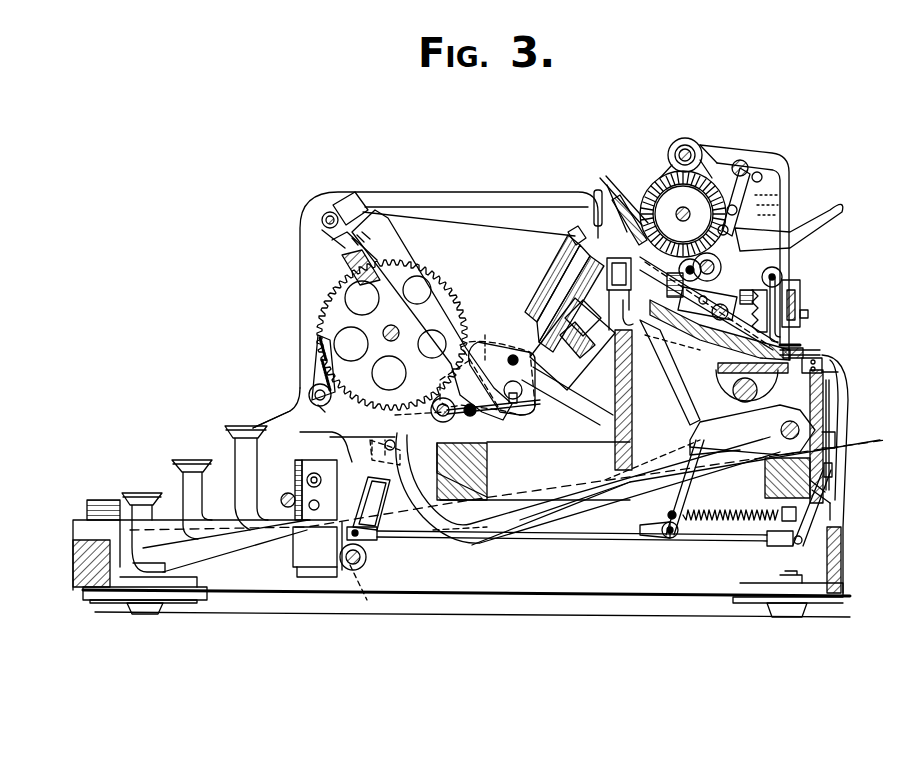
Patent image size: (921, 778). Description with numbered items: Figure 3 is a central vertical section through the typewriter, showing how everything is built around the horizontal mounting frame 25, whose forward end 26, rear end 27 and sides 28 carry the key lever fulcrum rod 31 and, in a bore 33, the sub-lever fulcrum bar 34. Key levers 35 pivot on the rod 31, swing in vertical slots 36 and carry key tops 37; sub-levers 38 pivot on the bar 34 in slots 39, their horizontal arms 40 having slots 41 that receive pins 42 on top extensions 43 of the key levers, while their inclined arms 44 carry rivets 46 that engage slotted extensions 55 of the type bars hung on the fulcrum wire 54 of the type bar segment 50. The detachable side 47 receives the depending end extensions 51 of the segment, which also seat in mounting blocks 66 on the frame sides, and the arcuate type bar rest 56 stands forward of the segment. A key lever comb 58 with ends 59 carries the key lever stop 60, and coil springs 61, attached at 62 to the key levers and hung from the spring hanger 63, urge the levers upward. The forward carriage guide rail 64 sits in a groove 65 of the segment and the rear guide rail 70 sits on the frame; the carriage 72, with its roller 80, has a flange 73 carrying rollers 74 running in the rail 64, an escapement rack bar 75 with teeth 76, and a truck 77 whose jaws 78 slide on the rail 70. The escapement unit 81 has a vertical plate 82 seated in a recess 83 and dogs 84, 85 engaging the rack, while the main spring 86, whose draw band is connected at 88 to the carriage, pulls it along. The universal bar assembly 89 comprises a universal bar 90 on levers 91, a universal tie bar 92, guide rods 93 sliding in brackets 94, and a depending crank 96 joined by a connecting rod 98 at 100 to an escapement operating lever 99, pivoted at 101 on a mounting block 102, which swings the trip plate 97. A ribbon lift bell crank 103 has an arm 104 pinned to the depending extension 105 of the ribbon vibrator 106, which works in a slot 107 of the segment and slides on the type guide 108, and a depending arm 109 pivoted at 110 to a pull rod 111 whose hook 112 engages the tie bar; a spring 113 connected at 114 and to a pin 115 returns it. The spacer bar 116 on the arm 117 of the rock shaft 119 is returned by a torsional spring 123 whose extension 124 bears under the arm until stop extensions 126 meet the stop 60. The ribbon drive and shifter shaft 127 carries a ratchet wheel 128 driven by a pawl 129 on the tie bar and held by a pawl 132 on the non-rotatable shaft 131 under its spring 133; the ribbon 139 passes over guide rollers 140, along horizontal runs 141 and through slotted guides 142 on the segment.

The mounting frame 25 is at (510, 522).
The forward end 26 is at (488, 471).
The rear end 27 is at (822, 487).
The sides 28 is at (545, 492).
The key lever fulcrum rod 31 is at (840, 441).
The cylindrical bore 33 is at (438, 498).
The sub-lever fulcrum bar 34 is at (420, 490).
The key levers 35 is at (475, 541).
The vertical slots 36 is at (765, 468).
The key tops 37 is at (203, 458).
The sub-levers 38 is at (488, 451).
The vertical slots 39 is at (488, 488).
The horizontal arms 40 is at (376, 456).
The slots 41 is at (374, 441).
The pins 42 is at (390, 440).
The top extensions 43 is at (345, 438).
The inclined arms 44 is at (502, 412).
The rivets 46 is at (538, 402).
The detachable side 47 is at (282, 412).
The type bar segment 50 is at (558, 287).
The depending end extensions 51 is at (573, 391).
The fulcrum wire 54 is at (522, 350).
The slotted extensions 55 is at (535, 407).
The type bar rest 56 is at (345, 263).
The key lever comb 58 is at (298, 470).
The comb ends 59 is at (312, 578).
The key lever stop 60 is at (285, 498).
The retractile coil springs 61 is at (630, 448).
The spring attachment 62 is at (625, 481).
The spring hanger 63 is at (636, 315).
The forward carriage guide rail 64 is at (563, 250).
The groove 65 is at (583, 318).
The mounting blocks 66 is at (583, 438).
The rear carriage guide rail 70 is at (740, 397).
The carriage 72 is at (772, 150).
The forward vertical flange 73 is at (640, 300).
The ball bearing rollers 74 is at (626, 254).
The escapement rack bar 75 is at (792, 346).
The rack teeth 76 is at (805, 354).
The truck 77 is at (718, 369).
The depending jaws 78 is at (786, 422).
The roller 80 is at (666, 190).
The escapement unit 81 is at (825, 403).
The vertical plate 82 is at (832, 471).
The machined recess 83 is at (818, 494).
The escapement dog 84 is at (812, 352).
The escapement dog 85 is at (823, 364).
The main spring 86 is at (655, 390).
The draw band connection 88 is at (690, 343).
The universal bar assembly 89 is at (445, 395).
The universal bar 90 is at (470, 404).
The universal bar levers 91 is at (486, 335).
The universal tie bar 92 is at (438, 418).
The guide rods 93 is at (561, 402).
The guide brackets 94 is at (682, 480).
The depending crank 96 is at (371, 503).
The trip plate 97 is at (838, 375).
The connecting rod 98 is at (600, 541).
The escapement operating lever 99 is at (847, 411).
The pivot connection 100 is at (797, 544).
The lever pivot 101 is at (852, 450).
The mounting block 102 is at (832, 441).
The ribbon lift bell crank 103 is at (735, 455).
The forwardly projecting arm 104 is at (586, 347).
The depending extension 105 is at (542, 300).
The ribbon vibrator 106 is at (592, 206).
The slot 107 is at (571, 236).
The type guide 108 is at (618, 195).
The depending arm 109 is at (680, 525).
The pivot 110 is at (668, 538).
The pull rod 111 is at (551, 440).
The hook 112 is at (440, 410).
The retractile coil spring 113 is at (710, 522).
The spring connection 114 is at (670, 516).
The pin 115 is at (840, 520).
The spacer bar 116 is at (104, 499).
The arm 117 is at (248, 557).
The rock shaft 119 is at (366, 556).
The torsional spring 123 is at (374, 588).
The end extension 124 is at (352, 566).
The stop extensions 126 is at (283, 553).
The ribbon drive and shifter shaft 127 is at (400, 322).
The ratchet wheel 128 is at (322, 306).
The driving pawl 129 is at (395, 411).
The non-rotatable shaft 131 is at (315, 373).
The holding pawl 132 is at (328, 340).
The spring 133 is at (330, 350).
The ribbon 139 is at (437, 215).
The guide rollers 140 is at (325, 214).
The horizontal runs 141 is at (483, 207).
The slotted guides 142 is at (602, 196).